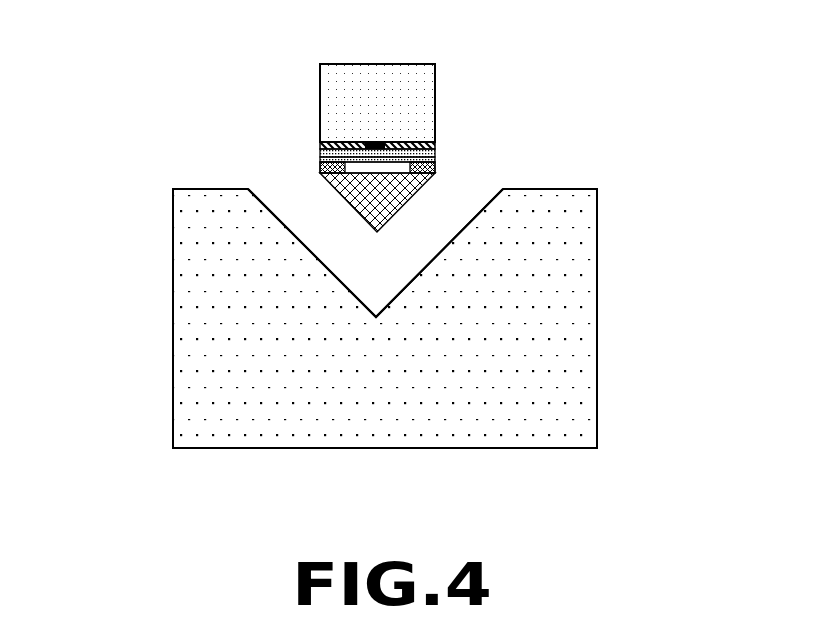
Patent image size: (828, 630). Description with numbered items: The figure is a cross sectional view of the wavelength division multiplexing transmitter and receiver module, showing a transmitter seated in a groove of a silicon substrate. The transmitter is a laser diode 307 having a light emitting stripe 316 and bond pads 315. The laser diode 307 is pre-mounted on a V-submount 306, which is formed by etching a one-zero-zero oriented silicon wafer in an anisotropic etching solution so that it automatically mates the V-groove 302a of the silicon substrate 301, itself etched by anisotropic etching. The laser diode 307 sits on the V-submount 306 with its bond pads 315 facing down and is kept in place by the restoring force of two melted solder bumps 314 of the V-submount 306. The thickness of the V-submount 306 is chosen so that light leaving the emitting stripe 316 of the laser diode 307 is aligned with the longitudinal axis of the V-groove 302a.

The silicon substrate 301 is at (242, 321).
The V-groove 302a is at (383, 256).
The laser diode 307 is at (342, 102).
The bond pads 315 is at (321, 160).
The light emitting stripe 316 is at (380, 141).
The melted solder bumps 314 is at (435, 167).
The V-submount 306 is at (380, 200).